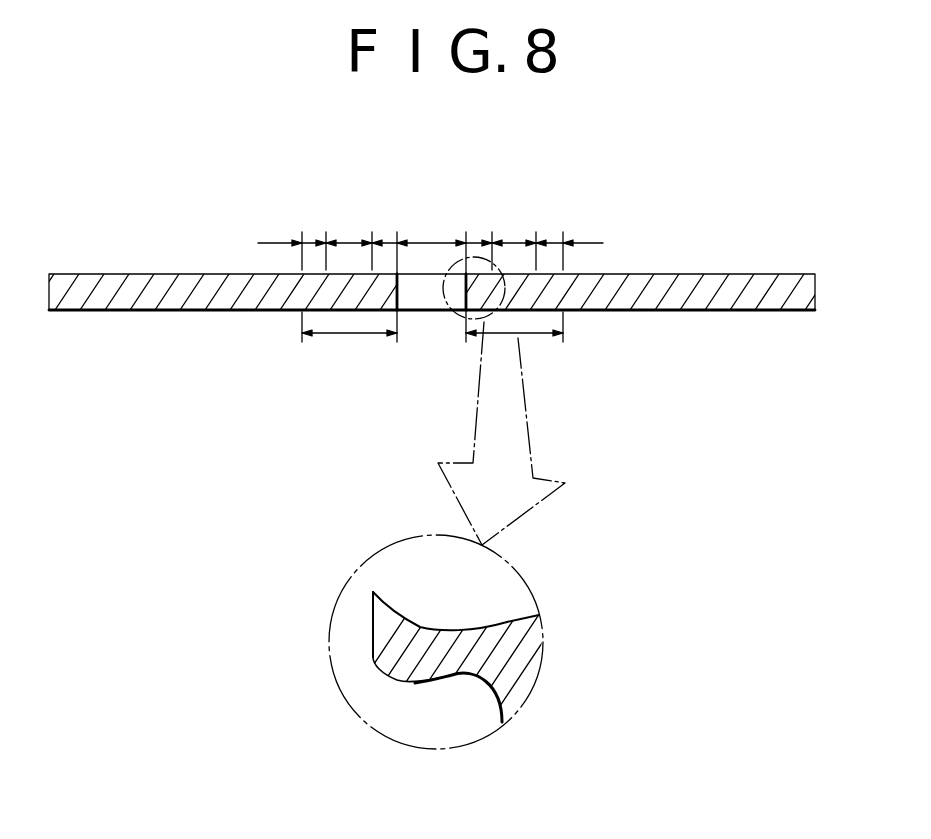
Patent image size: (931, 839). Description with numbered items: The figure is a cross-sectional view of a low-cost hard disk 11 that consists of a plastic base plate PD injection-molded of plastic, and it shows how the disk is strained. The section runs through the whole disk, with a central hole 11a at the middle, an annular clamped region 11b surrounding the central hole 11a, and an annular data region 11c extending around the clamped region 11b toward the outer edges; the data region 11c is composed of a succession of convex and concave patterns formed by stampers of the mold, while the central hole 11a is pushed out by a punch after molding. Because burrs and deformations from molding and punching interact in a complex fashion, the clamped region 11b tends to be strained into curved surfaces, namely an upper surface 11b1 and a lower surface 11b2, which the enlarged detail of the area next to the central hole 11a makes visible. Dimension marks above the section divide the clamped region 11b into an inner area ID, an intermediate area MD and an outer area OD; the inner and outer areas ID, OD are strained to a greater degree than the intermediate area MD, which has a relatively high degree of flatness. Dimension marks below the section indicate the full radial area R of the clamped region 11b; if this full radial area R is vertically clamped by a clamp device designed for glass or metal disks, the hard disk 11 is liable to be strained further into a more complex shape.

The hard disk 11 is at (724, 272).
The central hole 11a is at (403, 312).
The clamped region 11b is at (343, 298).
The upper surface 11b1 is at (477, 276).
The lower surface 11b2 is at (467, 320).
The data region 11c is at (157, 300).
The plastic base plate PD is at (796, 295).
The full radial area R is at (352, 334).
The outer area OD is at (313, 240).
The intermediate area MD is at (350, 240).
The inner area ID is at (383, 240).